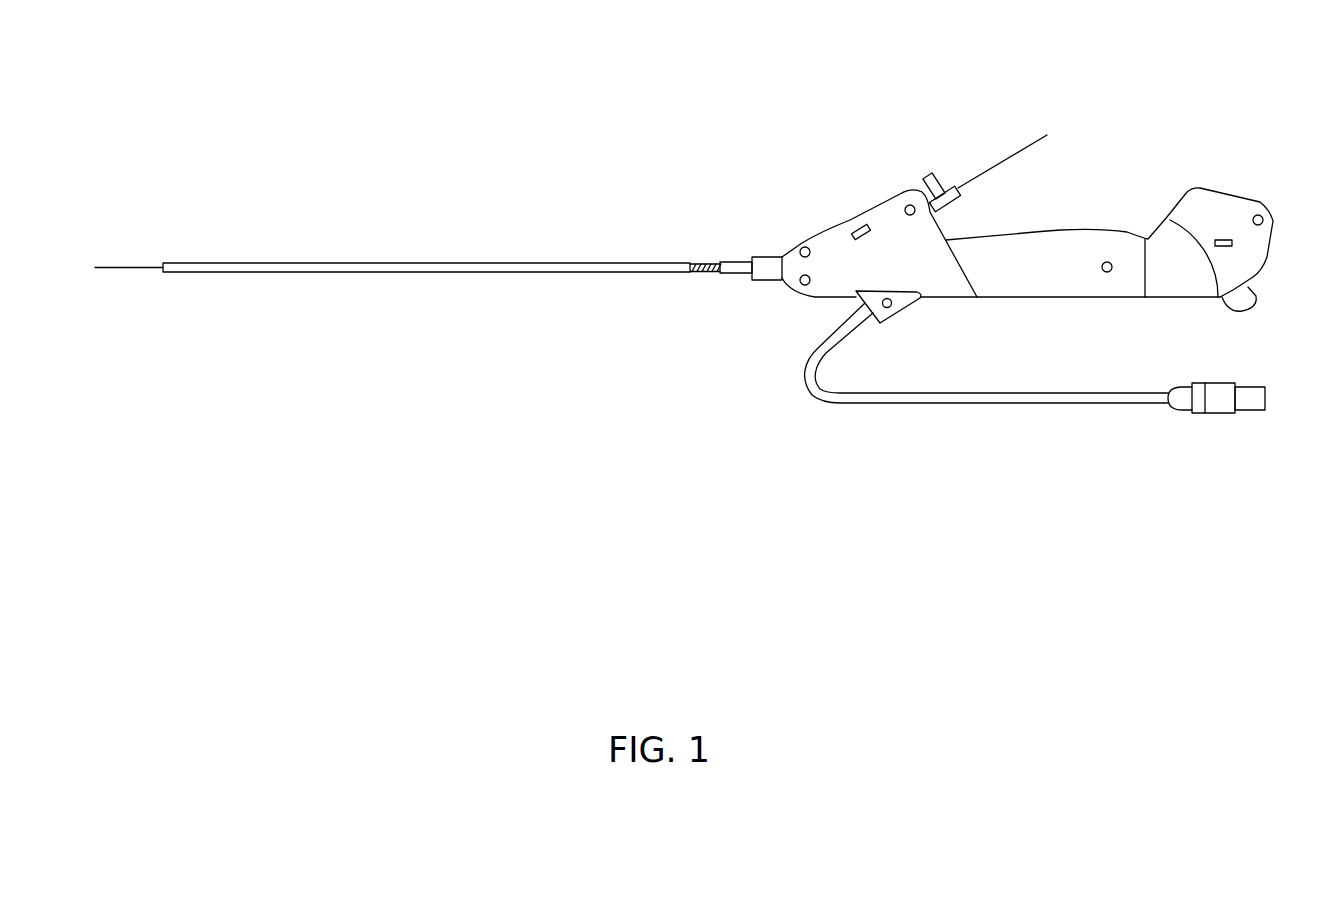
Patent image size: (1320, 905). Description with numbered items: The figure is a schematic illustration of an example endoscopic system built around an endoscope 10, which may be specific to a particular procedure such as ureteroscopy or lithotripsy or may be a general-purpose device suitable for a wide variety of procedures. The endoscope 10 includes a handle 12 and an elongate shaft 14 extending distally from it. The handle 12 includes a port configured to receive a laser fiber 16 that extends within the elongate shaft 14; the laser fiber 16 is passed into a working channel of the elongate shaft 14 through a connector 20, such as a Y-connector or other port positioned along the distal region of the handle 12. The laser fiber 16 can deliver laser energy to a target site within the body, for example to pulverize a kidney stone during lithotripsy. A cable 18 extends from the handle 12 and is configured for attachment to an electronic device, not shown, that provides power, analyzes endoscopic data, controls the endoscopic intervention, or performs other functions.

The endoscope 10 is at (262, 138).
The handle 12 is at (1160, 155).
The elongate shaft 14 is at (426, 273).
The laser fiber 16 is at (130, 266).
The cable 18 is at (1003, 392).
The connector 20 is at (935, 167).